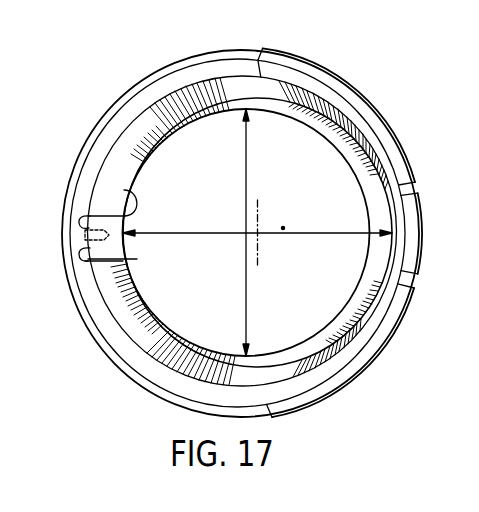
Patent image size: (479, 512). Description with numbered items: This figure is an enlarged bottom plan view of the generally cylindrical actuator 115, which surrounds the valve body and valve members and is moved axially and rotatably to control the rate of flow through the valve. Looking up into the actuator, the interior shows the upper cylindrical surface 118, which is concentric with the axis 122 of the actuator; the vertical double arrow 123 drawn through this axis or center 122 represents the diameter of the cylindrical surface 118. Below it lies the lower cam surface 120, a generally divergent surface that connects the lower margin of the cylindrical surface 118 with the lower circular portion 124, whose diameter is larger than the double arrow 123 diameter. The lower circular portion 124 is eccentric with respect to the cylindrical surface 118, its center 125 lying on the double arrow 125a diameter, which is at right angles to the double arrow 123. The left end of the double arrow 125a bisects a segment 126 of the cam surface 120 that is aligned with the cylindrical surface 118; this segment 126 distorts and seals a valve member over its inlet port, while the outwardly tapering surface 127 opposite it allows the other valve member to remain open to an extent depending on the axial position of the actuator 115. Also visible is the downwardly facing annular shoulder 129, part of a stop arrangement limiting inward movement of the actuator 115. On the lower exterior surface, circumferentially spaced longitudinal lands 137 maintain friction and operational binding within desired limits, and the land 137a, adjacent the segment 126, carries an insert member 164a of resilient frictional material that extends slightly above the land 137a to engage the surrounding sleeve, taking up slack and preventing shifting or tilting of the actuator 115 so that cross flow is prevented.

The actuator 115 is at (102, 97).
The downwardly facing annular shoulder 129 is at (162, 90).
The longitudinal lands 137 is at (267, 74).
The land 137a is at (135, 256).
The lower cam surface 120 is at (373, 280).
The outwardly tapering surface 127 is at (378, 210).
The upper cylindrical surface 118 is at (240, 113).
The vertical double arrow 123 is at (251, 164).
The double arrow 125a is at (287, 238).
The axis 122 is at (240, 231).
The center 125 is at (259, 233).
The segment of the cam surface 126 is at (128, 195).
The insert member 164a is at (130, 219).
The lower circular portion 124 is at (312, 356).